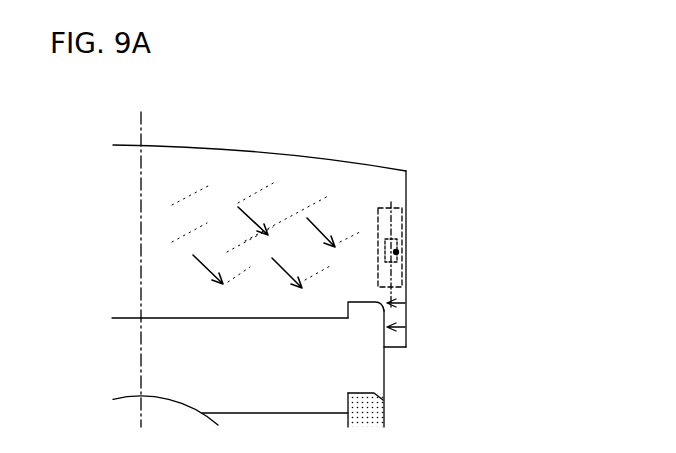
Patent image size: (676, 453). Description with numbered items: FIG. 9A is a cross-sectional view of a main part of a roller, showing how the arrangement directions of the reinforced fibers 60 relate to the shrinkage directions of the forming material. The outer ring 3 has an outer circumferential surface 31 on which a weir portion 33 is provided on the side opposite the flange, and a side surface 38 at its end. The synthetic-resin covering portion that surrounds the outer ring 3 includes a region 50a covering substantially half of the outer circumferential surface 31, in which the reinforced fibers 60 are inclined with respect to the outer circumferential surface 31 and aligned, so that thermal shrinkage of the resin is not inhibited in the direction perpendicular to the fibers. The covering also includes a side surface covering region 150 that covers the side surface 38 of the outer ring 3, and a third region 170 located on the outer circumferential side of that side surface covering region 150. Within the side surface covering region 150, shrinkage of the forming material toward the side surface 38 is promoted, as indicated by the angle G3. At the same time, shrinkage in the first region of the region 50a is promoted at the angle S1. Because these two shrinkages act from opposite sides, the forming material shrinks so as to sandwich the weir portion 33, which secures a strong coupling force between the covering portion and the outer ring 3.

The outer ring 3 is at (123, 358).
The outer circumferential surface 31 is at (226, 318).
The weir portion 33 is at (363, 310).
The side surface 38 is at (384, 338).
The region 50a is at (188, 131).
The reinforced fibers 60 is at (213, 182).
The side surface covering region 150 is at (407, 342).
The third region 170 is at (406, 206).
The angle G3 is at (386, 245).
The angle S1 is at (322, 232).